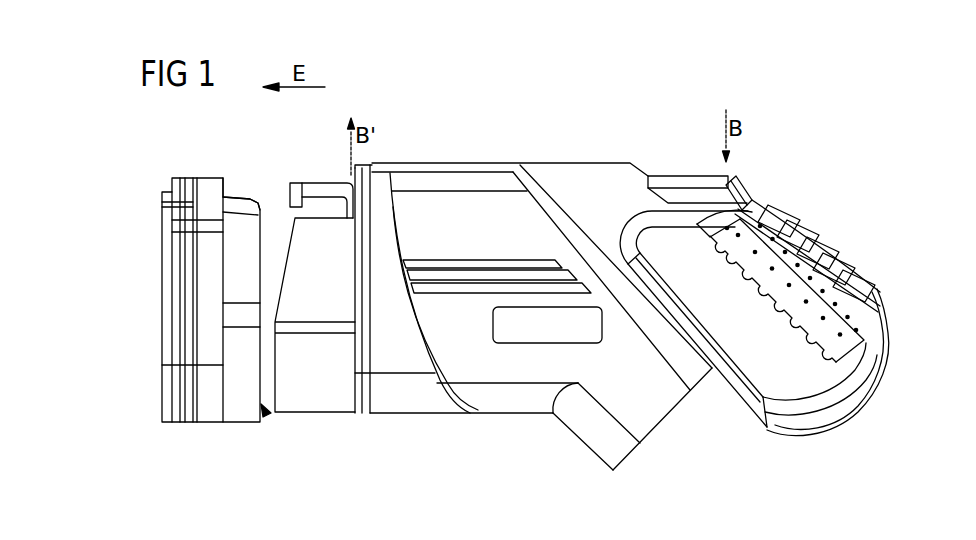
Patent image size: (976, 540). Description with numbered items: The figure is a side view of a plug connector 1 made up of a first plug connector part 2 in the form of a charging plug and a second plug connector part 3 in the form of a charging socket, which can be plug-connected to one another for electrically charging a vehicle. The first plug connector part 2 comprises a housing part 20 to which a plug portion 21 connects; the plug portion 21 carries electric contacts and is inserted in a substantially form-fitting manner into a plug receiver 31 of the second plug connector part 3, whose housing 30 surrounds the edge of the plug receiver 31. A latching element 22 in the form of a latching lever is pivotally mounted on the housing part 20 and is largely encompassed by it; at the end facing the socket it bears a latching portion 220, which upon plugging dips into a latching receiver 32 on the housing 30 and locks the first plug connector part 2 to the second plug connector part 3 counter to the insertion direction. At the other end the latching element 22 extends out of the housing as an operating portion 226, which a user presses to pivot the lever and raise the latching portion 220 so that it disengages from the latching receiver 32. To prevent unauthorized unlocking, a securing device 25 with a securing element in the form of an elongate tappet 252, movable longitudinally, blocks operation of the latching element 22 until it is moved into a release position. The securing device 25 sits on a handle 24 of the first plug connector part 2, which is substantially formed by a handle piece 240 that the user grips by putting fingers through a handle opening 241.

The plug connector 1 is at (536, 120).
The first plug connector part 2 is at (586, 148).
The second plug connector part 3 is at (207, 447).
The housing part 20 is at (433, 163).
The plug portion 21 is at (322, 395).
The latching element 22 is at (321, 168).
The latching portion 220 is at (297, 190).
The operating portion 226 is at (686, 180).
The handle 24 is at (900, 333).
The handle piece 240 is at (840, 263).
The handle opening 241 is at (792, 388).
The securing device 25 is at (890, 395).
The tappet 252 is at (744, 193).
The housing 30 is at (173, 410).
The plug receiver 31 is at (268, 415).
The latching receiver 32 is at (236, 180).